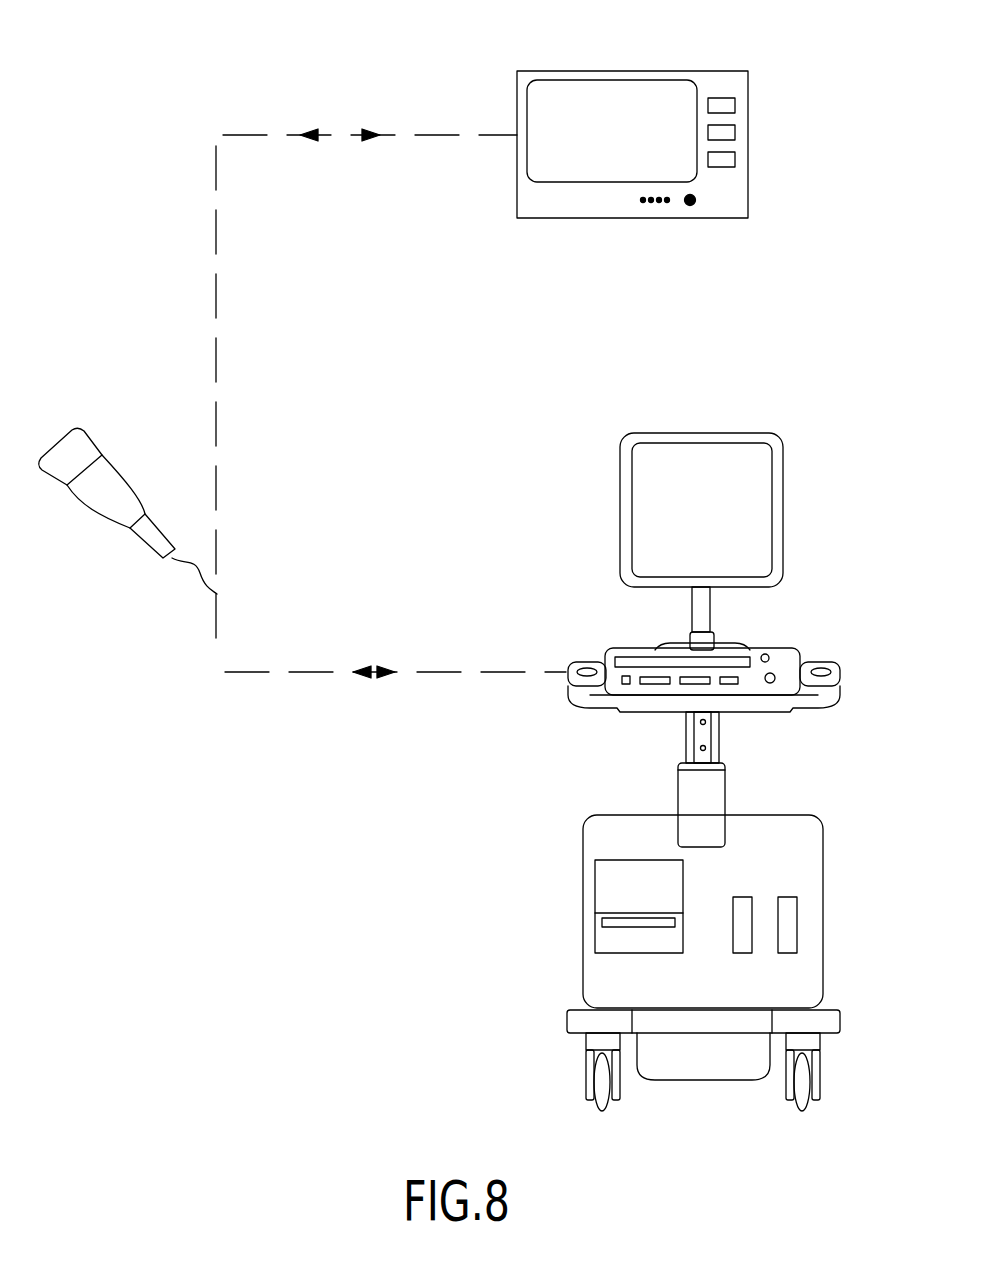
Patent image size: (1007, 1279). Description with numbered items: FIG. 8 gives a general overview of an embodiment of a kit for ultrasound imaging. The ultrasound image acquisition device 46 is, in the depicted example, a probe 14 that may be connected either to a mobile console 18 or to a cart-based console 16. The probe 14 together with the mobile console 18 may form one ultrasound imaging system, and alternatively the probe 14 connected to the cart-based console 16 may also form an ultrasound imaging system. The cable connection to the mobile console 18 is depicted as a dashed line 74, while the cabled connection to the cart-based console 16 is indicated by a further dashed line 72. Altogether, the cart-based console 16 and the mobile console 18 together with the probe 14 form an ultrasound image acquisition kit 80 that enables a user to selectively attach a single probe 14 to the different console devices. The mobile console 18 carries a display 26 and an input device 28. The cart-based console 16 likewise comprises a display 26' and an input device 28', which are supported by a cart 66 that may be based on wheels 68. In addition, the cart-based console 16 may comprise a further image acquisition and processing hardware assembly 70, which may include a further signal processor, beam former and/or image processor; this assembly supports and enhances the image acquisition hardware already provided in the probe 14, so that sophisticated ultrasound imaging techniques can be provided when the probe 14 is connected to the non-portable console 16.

The ultrasound image acquisition kit 80 is at (160, 105).
The cable connection 74 is at (318, 133).
The cabled connection 72 is at (303, 673).
The mobile console 18 is at (660, 141).
The display 26 is at (612, 95).
The input device 28 is at (700, 239).
The probe 14 is at (118, 465).
The ultrasound image acquisition device 46 is at (55, 428).
The cart-based console 16 is at (686, 796).
The display 26' is at (667, 510).
The input device 28' is at (724, 699).
The further image acquisition and processing hardware assembly 70 is at (610, 877).
The cart 66 is at (666, 961).
The wheels 68 is at (608, 1108).